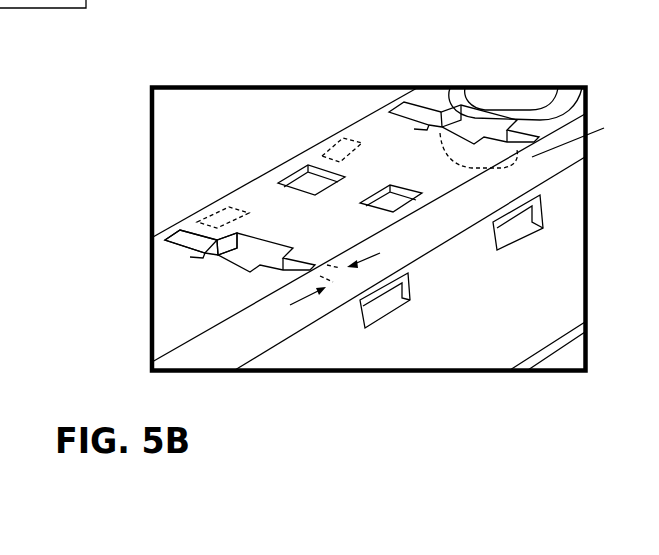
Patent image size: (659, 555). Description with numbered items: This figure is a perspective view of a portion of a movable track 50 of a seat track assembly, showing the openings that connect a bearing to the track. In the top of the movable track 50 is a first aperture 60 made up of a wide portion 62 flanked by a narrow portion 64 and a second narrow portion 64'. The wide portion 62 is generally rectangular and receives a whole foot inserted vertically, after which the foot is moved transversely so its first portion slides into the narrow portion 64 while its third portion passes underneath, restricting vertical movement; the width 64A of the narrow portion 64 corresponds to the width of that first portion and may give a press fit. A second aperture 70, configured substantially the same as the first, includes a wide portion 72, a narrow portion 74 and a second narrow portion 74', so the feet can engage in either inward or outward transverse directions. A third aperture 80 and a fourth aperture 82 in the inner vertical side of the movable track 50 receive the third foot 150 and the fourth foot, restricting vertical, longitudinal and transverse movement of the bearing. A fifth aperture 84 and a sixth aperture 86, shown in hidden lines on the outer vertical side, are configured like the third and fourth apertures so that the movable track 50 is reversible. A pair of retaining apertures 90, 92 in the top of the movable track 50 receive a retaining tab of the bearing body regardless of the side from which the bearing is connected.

The movable track 50 is at (211, 134).
The aperture 60 is at (228, 281).
The wide portion 62 is at (277, 240).
The narrow portion 64 is at (240, 323).
The second narrow portion 64' is at (152, 239).
The width of narrow portion 64A is at (340, 272).
The second aperture 70 is at (520, 128).
The wide portion 72 is at (515, 160).
The narrow portion 74 is at (580, 137).
The second narrow portion 74' is at (464, 91).
The third aperture 80 is at (390, 308).
The fourth aperture 82 is at (523, 233).
The fifth aperture 84 is at (338, 138).
The sixth aperture 86 is at (200, 208).
The retaining aperture 90 is at (408, 208).
The retaining aperture 92 is at (292, 165).
The third foot 150 is at (56, 12).